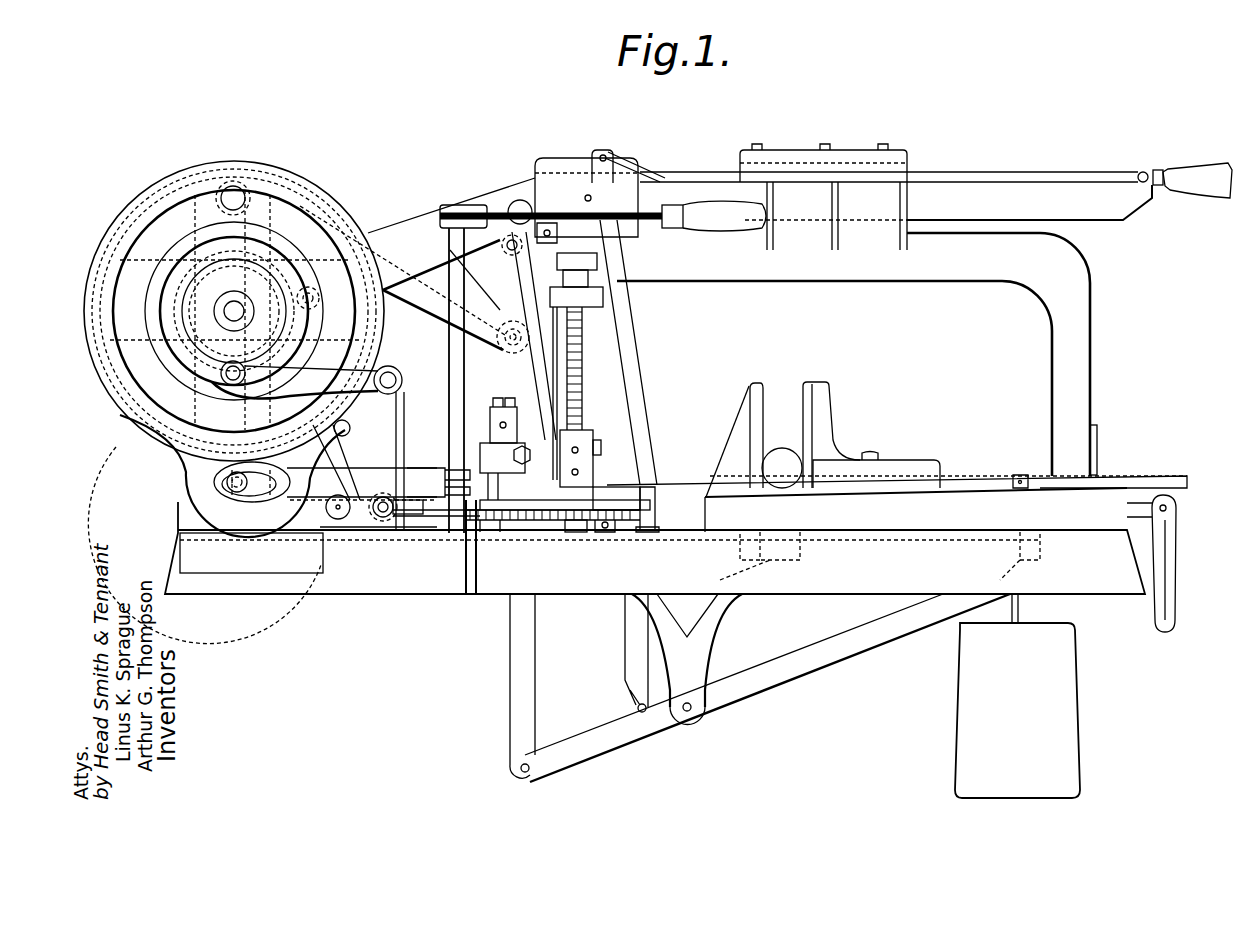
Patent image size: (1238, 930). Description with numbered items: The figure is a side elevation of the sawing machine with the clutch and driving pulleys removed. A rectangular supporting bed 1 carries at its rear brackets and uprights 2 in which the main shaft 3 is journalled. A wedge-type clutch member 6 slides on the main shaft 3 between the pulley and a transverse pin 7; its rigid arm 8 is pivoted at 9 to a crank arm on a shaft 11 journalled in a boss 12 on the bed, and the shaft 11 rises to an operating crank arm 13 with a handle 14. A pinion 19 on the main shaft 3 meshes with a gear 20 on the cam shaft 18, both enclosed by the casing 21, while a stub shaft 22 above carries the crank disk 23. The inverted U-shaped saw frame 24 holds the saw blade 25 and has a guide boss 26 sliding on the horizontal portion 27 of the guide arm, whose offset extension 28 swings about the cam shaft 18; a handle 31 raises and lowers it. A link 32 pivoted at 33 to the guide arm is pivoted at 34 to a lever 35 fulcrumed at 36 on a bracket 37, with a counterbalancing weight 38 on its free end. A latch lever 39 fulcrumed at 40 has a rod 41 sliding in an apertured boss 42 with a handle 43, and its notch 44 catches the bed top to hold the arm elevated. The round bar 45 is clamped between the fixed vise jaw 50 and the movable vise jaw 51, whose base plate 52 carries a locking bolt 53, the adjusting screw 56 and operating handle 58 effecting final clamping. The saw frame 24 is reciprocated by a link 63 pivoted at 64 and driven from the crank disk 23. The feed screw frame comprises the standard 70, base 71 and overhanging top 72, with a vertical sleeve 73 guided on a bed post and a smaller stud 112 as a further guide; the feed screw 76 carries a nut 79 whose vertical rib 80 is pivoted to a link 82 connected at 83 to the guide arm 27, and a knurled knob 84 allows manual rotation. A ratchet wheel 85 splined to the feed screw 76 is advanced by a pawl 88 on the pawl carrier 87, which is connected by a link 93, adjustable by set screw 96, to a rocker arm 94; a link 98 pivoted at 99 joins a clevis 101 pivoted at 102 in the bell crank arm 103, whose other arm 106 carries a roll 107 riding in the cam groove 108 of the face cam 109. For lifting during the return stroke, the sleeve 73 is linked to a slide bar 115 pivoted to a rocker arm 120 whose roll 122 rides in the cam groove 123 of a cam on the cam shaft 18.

The supporting bed 1 is at (1108, 583).
The brackets and uprights 2 is at (182, 520).
The main shaft 3 is at (234, 492).
The clutch member 6 is at (214, 482).
The transverse pin 7 is at (248, 495).
The rigid arm 8 is at (325, 486).
The pivot 9 is at (430, 470).
The shaft 11 is at (448, 352).
The boss 12 is at (445, 578).
The operating crank arm 13 is at (520, 205).
The handle 14 is at (735, 205).
The cam shaft 18 is at (232, 312).
The pinion 19 is at (186, 466).
The gear 20 is at (113, 395).
The casing 21 is at (125, 240).
The stub shaft 22 is at (310, 200).
The crank disk 23 is at (178, 212).
The saw frame 24 is at (975, 270).
The saw blade 25 is at (968, 477).
The guide boss 26 is at (800, 158).
The horizontally extending portion of saw guide arm 27 is at (1098, 212).
The offset extension 28 is at (421, 222).
The handle 31 is at (1205, 176).
The link 32 is at (511, 664).
The pivot 33 is at (507, 250).
The pivot 34 is at (530, 770).
The lever 35 is at (795, 670).
The fulcrum 36 is at (688, 712).
The bracket 37 is at (710, 645).
The counterbalancing weight 38 is at (960, 677).
The latch lever 39 is at (630, 390).
The fulcrum 40 is at (612, 208).
The rod 41 is at (1035, 178).
The apertured boss 42 is at (1143, 172).
The handle 43 is at (1160, 170).
The notch 44 is at (632, 675).
The round bar 45 is at (786, 460).
The fixed vise jaw 50 is at (760, 383).
The movable vise jaw 51 is at (826, 396).
The base plate 52 is at (908, 462).
The locking bolt 53 is at (872, 452).
The adjusting screw 56 is at (1163, 496).
The operating handle 58 is at (1178, 590).
The link 63 is at (428, 308).
The pivot 64 is at (500, 338).
The standard 70 is at (583, 368).
The base 71 is at (610, 500).
The overhanging top 72 is at (604, 298).
The vertical sleeve 73 is at (490, 468).
The feed screw 76 is at (584, 345).
The nut 79 is at (596, 440).
The vertical rib 80 is at (530, 430).
The link 82 is at (520, 283).
The pivot 83 is at (527, 203).
The knurled knob 84 is at (600, 262).
The ratchet wheel 85 is at (625, 508).
The radially projecting arm 87 is at (572, 533).
The pawl 88 is at (600, 533).
The link 93 is at (555, 522).
The rocker arm 94 is at (500, 525).
The set screw 96 is at (485, 535).
The link 98 is at (420, 515).
The pivotal connection 99 is at (460, 520).
The clevis 101 is at (384, 518).
The pivot 102 is at (372, 520).
The arm of bell crank lever 103 is at (402, 388).
The other arm of bell crank lever 106 is at (300, 385).
The roll 107 is at (232, 386).
The cam groove 108 is at (161, 298).
The face cam 109 is at (182, 375).
The stud 112 is at (656, 518).
The slide bar 115 is at (420, 428).
The rocker arm 120 is at (336, 436).
The roll 122 is at (388, 262).
The cam groove 123 is at (345, 215).